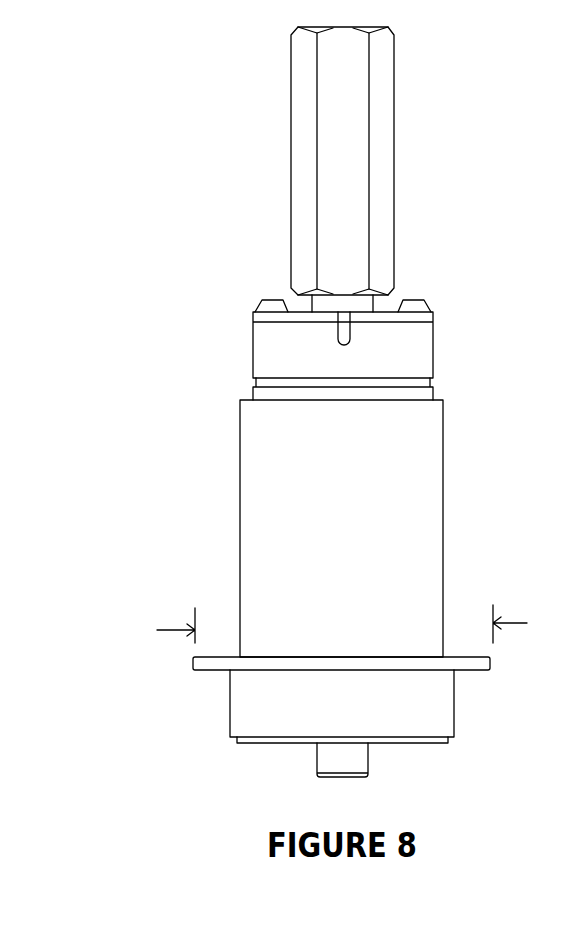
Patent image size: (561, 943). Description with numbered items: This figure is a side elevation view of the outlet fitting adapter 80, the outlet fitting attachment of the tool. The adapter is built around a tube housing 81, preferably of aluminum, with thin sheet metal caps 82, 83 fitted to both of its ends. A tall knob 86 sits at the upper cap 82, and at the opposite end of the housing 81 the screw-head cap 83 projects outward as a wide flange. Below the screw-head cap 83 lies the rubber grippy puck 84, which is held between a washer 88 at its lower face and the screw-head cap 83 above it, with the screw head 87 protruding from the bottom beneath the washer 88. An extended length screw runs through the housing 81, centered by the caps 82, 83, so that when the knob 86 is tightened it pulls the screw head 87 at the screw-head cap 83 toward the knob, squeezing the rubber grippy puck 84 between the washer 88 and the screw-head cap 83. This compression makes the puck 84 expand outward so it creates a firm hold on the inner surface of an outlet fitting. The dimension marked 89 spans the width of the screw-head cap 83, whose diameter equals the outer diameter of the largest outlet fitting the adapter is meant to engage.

The outlet fitting adapter 80 is at (175, 103).
The tube housing 81 is at (430, 473).
The cap 82 is at (382, 315).
The screw-head cap 83 is at (474, 668).
The rubber grippy puck 84 is at (454, 715).
The knob 86 is at (385, 105).
The screw head 87 is at (317, 758).
The washer 88 is at (254, 743).
The flange width dimension 89 is at (527, 623).